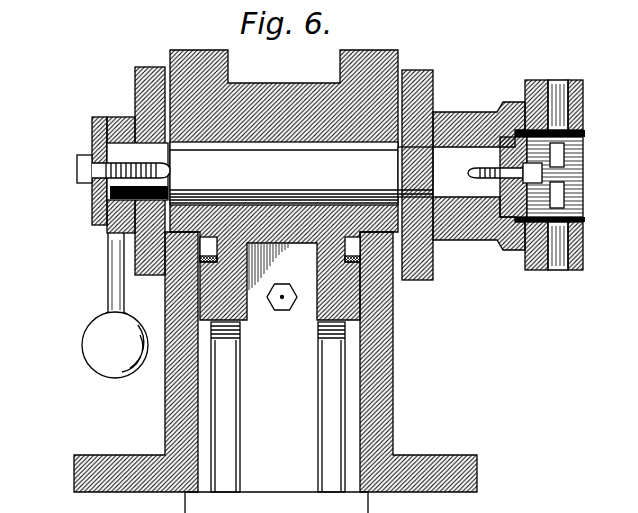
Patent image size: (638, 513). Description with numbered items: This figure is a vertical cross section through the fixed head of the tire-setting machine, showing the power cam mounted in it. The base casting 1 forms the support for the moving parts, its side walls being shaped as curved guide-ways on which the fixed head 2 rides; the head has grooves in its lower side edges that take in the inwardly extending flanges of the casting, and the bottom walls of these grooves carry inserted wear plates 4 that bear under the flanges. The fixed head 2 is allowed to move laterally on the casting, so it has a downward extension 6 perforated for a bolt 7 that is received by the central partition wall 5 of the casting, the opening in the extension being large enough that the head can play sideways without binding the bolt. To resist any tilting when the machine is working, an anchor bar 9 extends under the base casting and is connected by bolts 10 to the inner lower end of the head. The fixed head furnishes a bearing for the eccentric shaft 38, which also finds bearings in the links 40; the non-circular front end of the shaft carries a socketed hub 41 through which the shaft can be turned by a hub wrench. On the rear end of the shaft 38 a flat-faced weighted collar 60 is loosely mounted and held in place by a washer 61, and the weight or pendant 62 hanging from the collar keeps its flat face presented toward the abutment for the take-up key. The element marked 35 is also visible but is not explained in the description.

The base casting 1 is at (165, 420).
The fixed head 2 is at (266, 97).
The wear plates 4 is at (210, 258).
The central partition wall 5 is at (279, 377).
The downward extension 6 is at (273, 267).
The bolt 7 is at (282, 300).
The anchor bar 9 is at (276, 501).
The bolts 10 is at (318, 455).
The support 35 is at (540, 503).
The eccentric shaft 38 is at (301, 173).
The links 40 is at (146, 68).
The socketed hubs 41 is at (508, 107).
The weighted collar 60 is at (124, 128).
The washer 61 is at (97, 133).
The weight or pendant 62 is at (104, 340).